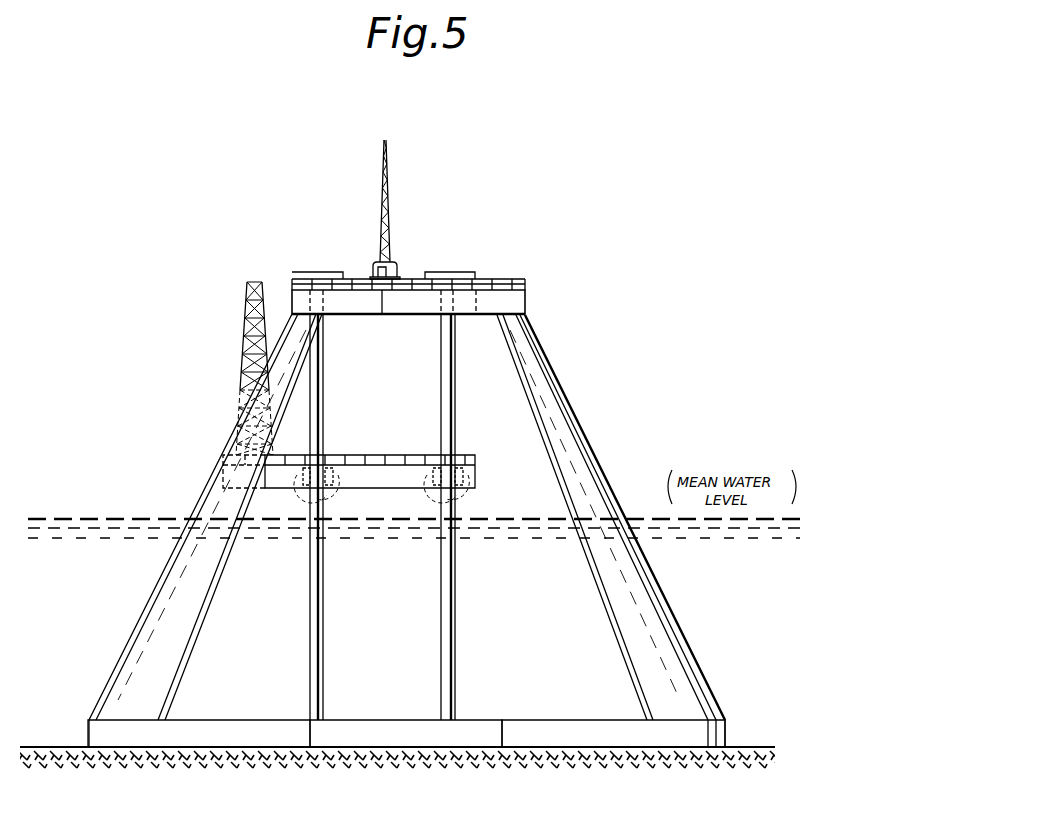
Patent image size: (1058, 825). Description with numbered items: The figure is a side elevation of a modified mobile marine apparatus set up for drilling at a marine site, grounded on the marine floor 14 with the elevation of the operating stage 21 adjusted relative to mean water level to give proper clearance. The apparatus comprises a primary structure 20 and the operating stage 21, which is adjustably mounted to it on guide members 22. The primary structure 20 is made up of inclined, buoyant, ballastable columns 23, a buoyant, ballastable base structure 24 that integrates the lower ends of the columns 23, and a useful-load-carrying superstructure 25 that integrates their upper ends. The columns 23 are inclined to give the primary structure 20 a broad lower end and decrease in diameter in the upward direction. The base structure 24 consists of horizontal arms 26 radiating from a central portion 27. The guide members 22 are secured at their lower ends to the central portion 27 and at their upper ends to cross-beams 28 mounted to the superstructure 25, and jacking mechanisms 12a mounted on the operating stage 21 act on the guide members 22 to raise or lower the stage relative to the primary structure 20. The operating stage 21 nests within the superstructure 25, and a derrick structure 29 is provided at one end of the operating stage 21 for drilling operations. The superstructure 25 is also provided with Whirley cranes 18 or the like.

The marine floor 14 is at (57, 745).
The Whirley crane 18 is at (389, 190).
The primary structure 20 is at (407, 530).
The operating stage 21 is at (475, 477).
The jacking mechanism 12a is at (328, 494).
The guide member 22 is at (322, 580).
The inclined column 23 is at (175, 577).
The base structure 24 is at (406, 715).
The useful-load-carrying superstructure 25 is at (525, 300).
The horizontal arm 26 is at (228, 732).
The central portion 27 is at (362, 727).
The cross-beam 28 is at (302, 274).
The derrick structure 29 is at (245, 345).